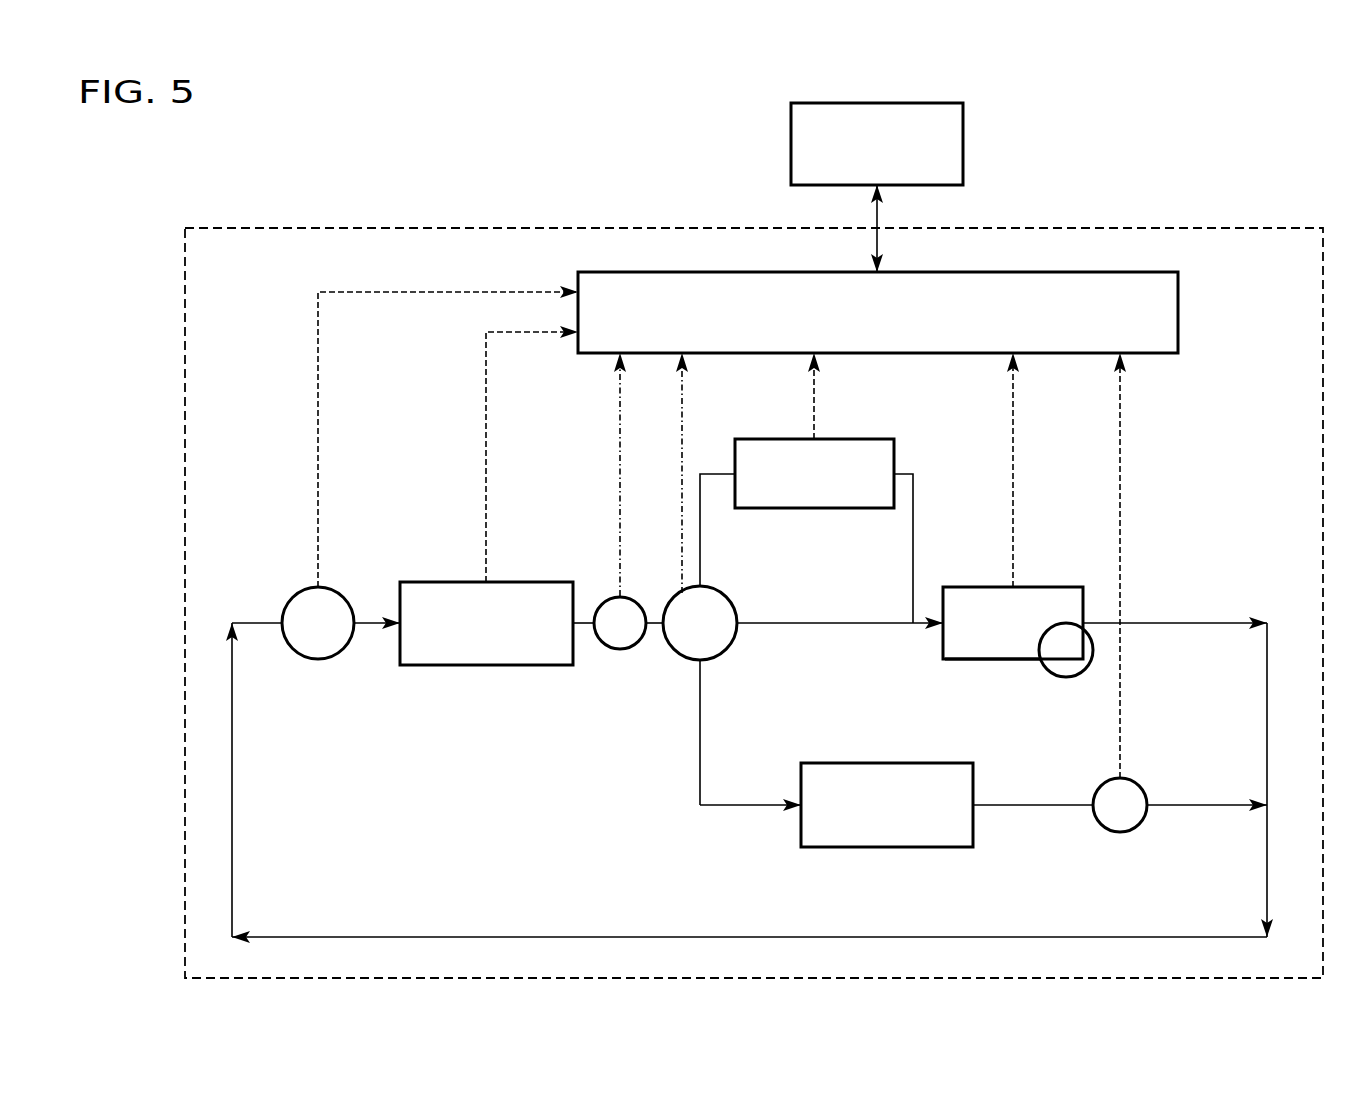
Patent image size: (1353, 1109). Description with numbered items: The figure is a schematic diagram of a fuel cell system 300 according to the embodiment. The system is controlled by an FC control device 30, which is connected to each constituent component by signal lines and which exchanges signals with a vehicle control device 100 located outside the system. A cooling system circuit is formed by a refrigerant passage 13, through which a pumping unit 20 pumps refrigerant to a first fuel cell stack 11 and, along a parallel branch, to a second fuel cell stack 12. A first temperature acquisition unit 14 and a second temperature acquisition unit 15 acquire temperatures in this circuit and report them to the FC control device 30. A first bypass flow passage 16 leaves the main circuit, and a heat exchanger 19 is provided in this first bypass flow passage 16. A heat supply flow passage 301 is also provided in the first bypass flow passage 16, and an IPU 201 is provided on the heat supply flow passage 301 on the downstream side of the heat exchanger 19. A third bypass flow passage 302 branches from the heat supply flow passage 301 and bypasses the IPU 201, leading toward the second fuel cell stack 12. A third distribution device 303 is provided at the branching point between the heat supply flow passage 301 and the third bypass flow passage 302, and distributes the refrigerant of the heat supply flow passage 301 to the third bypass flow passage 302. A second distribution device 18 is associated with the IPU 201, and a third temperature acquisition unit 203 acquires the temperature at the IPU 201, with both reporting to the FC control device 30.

The fuel cell system 300 is at (305, 190).
The control device 100 is at (791, 143).
The FC control device 30 is at (1145, 272).
The pumping unit 20 is at (341, 591).
The refrigerant passage 13 is at (372, 621).
The first fuel cell stack 11 is at (486, 667).
The first temperature acquisition unit 14 is at (626, 600).
The first bypass flow passage 16 is at (660, 626).
The third distribution device 303 is at (706, 592).
The heat supply flow passage 301 is at (913, 528).
The heat exchanger 19 is at (852, 438).
The third bypass flow passage 302 is at (703, 700).
The IPU 201 is at (1045, 587).
The second distribution device 18 is at (995, 661).
The third temperature acquisition unit 203 is at (1067, 678).
The second temperature acquisition unit 15 is at (1135, 782).
The second fuel cell stack 12 is at (886, 849).